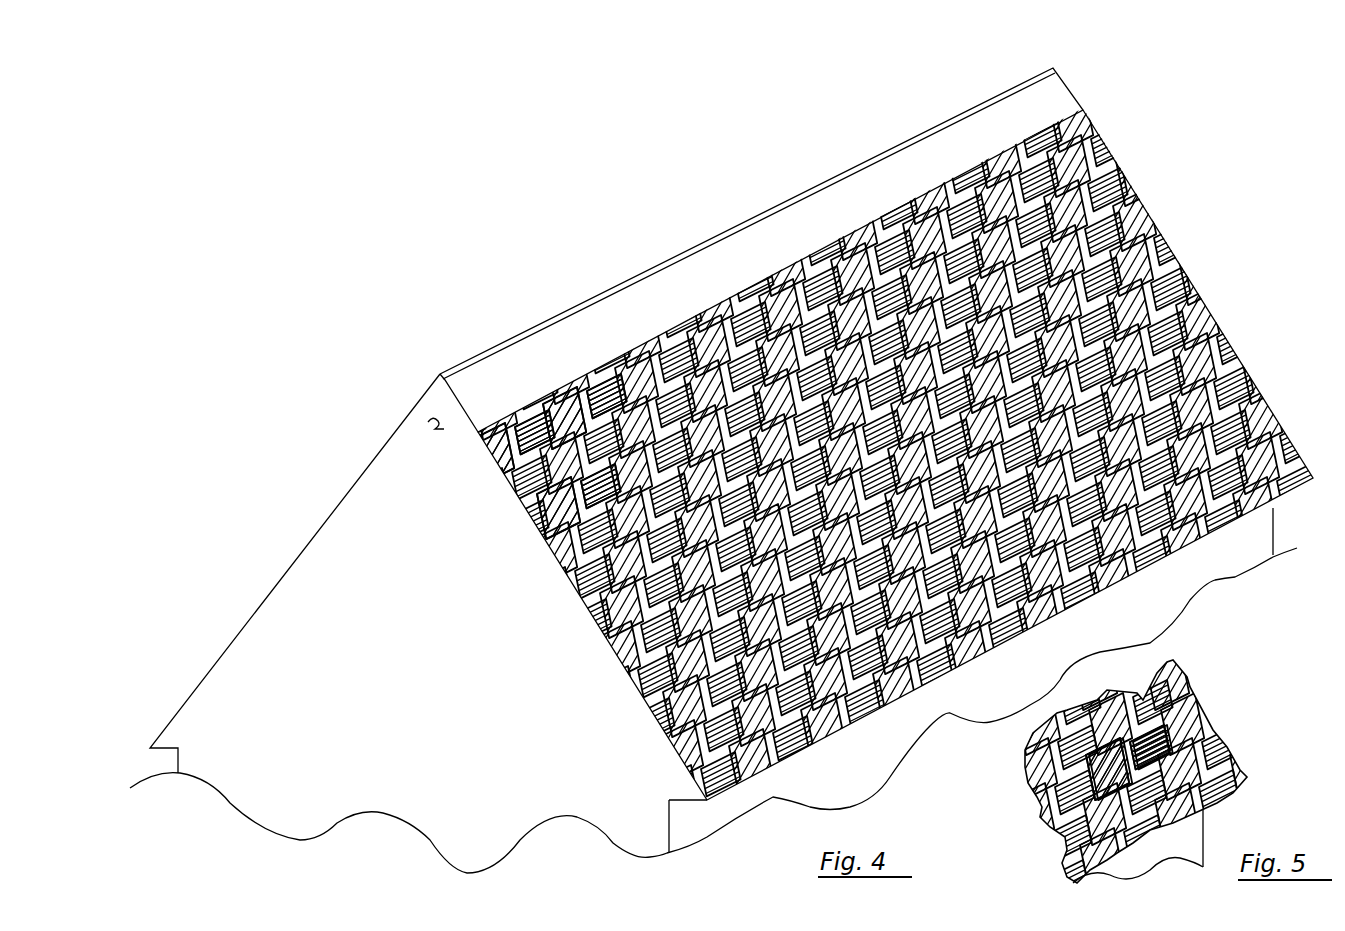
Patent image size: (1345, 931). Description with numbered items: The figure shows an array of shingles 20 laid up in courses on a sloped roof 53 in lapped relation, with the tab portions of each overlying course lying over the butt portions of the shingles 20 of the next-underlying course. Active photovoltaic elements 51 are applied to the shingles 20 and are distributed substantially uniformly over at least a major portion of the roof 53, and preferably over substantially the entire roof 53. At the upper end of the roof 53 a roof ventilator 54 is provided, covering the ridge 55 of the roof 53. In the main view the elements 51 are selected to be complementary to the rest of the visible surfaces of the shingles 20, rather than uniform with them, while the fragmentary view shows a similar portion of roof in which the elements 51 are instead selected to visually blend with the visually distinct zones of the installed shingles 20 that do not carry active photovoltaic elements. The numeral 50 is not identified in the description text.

In FIG. 5, the shingle 20 is at (1159, 783).
In FIG. 4, the shingle top surface 50 is at (757, 297).
In FIG. 5, the shingle top surface 50 is at (1170, 710).
In FIG. 4, the active photovoltaic element 51 is at (513, 413).
In FIG. 5, the active photovoltaic element 51 is at (1150, 748).
In FIG. 4, the roof 53 is at (690, 778).
In FIG. 4, the roof ventilator 54 is at (917, 132).
In FIG. 4, the ridge 55 is at (425, 428).